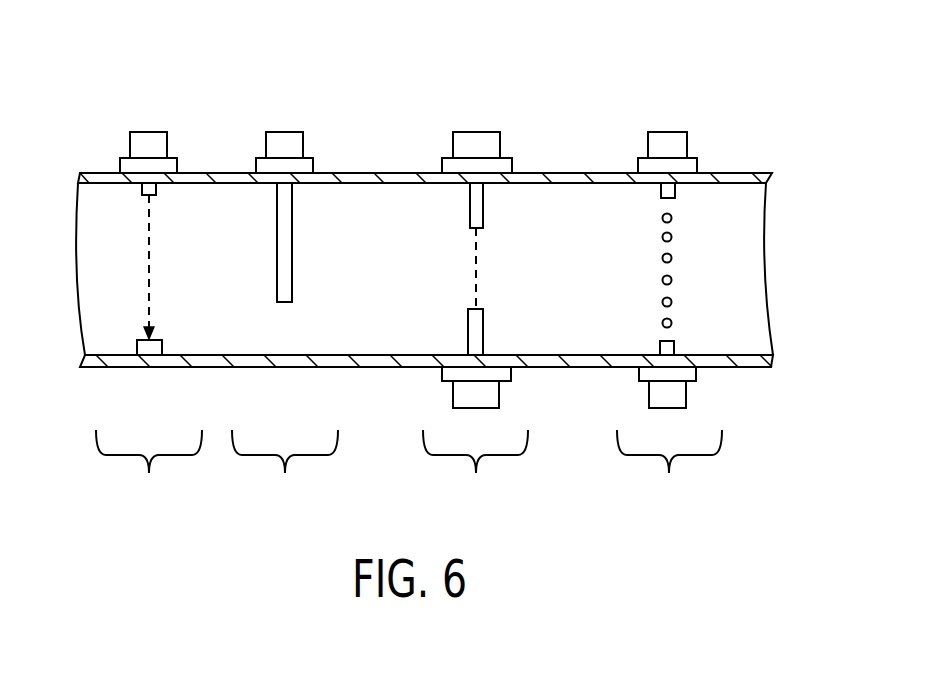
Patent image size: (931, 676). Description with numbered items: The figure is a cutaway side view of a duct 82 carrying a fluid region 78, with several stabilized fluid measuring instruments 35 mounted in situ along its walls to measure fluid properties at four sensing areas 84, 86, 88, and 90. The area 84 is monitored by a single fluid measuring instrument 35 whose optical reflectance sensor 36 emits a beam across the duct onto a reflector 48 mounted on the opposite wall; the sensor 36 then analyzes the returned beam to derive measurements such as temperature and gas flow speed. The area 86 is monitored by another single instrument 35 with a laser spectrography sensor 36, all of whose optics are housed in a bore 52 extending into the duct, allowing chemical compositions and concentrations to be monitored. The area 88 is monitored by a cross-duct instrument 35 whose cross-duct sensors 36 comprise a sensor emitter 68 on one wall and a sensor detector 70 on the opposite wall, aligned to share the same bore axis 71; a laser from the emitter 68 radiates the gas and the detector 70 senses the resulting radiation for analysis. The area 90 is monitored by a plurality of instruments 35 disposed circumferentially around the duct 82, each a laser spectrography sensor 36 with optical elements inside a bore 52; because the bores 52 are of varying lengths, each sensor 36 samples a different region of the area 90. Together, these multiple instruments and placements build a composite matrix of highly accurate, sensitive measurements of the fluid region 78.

The fluid measuring instrument 35 is at (197, 75).
The sensor 36 is at (155, 131).
The reflector 48 is at (152, 367).
The bore 52 is at (292, 245).
The sensor emitter 68 is at (480, 131).
The sensor detector 70 is at (453, 393).
The bore axis 71 is at (478, 240).
The fluid region 78 is at (434, 290).
The duct 82 is at (762, 173).
The area 84 is at (149, 472).
The area 86 is at (285, 472).
The area 88 is at (475, 472).
The area 90 is at (669, 472).